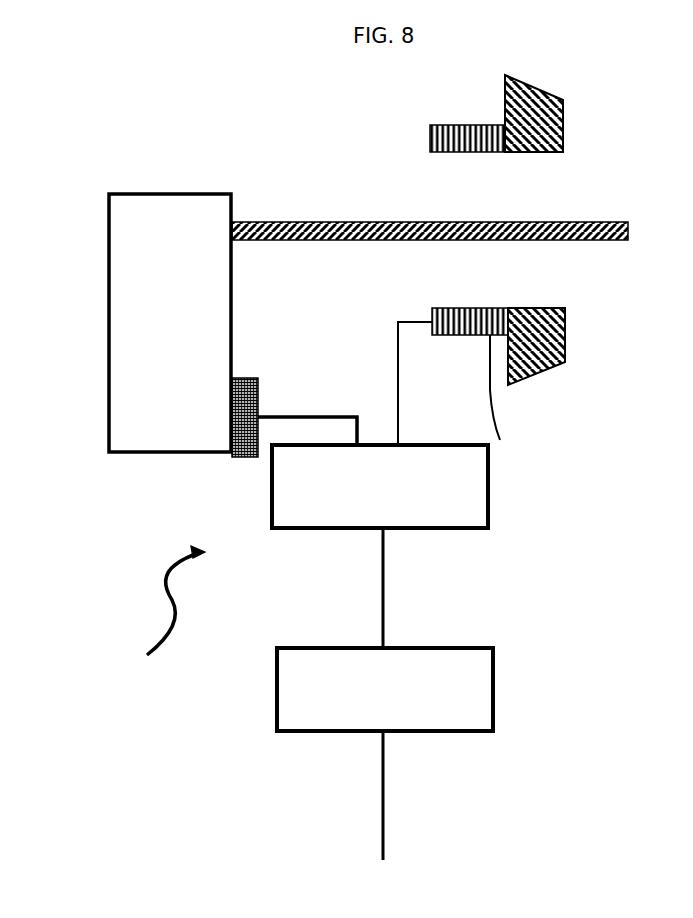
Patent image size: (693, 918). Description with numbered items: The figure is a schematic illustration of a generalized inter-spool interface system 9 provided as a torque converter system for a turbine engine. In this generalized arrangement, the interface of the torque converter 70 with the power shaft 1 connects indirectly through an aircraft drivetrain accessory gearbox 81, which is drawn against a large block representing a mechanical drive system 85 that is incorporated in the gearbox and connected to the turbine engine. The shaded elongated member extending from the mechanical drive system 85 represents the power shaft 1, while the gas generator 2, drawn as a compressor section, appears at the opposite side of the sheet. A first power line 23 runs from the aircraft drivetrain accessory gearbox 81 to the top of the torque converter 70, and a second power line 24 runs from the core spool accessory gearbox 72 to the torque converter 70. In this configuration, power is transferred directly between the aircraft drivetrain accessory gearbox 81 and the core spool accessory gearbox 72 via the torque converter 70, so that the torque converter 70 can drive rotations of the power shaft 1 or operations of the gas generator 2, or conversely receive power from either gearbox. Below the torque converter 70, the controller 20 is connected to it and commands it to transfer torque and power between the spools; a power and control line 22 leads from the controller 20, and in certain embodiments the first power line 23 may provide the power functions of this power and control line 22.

The power shaft 1 is at (292, 213).
The gas generator 2 is at (545, 113).
The inter-spool interface system 9 is at (163, 615).
The controller 20 is at (493, 690).
The power and control line 22 is at (383, 786).
The first power line 23 is at (300, 415).
The second power line 24 is at (399, 376).
The torque converter 70 is at (488, 508).
The core spool accessory gearbox 72 is at (498, 394).
The aircraft drivetrain accessory gearbox 81 is at (260, 380).
The mechanical drive system 85 is at (109, 194).